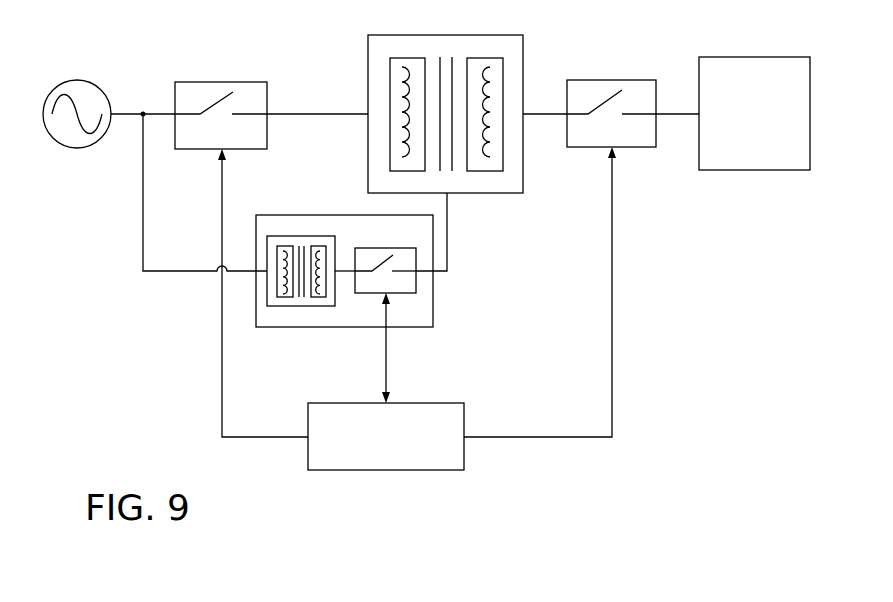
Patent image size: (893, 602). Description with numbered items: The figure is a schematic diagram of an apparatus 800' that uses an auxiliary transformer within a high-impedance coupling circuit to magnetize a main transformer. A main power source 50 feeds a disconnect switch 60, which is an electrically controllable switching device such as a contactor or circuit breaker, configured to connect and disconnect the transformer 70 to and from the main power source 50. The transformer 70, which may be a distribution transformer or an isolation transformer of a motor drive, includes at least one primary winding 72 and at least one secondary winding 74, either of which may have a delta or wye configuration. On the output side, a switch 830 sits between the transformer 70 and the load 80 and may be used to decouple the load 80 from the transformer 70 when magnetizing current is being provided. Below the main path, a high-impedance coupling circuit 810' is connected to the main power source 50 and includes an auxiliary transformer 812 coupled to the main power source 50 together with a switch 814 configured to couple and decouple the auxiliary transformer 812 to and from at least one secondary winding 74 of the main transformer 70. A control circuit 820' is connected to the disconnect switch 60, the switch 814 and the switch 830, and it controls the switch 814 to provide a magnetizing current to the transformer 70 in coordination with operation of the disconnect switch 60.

The main power source 50 is at (77, 80).
The disconnect switch 60 is at (222, 82).
The transformer 70 is at (445, 103).
The primary winding 72 is at (407, 58).
The secondary winding 74 is at (484, 58).
The load 80 is at (752, 57).
The high-impedance coupling circuit 810' is at (344, 285).
The auxiliary transformer 812 is at (302, 236).
The switch 814 is at (385, 248).
The control circuit 820' is at (386, 450).
The switch 830 is at (610, 80).
The apparatus 800' is at (614, 526).